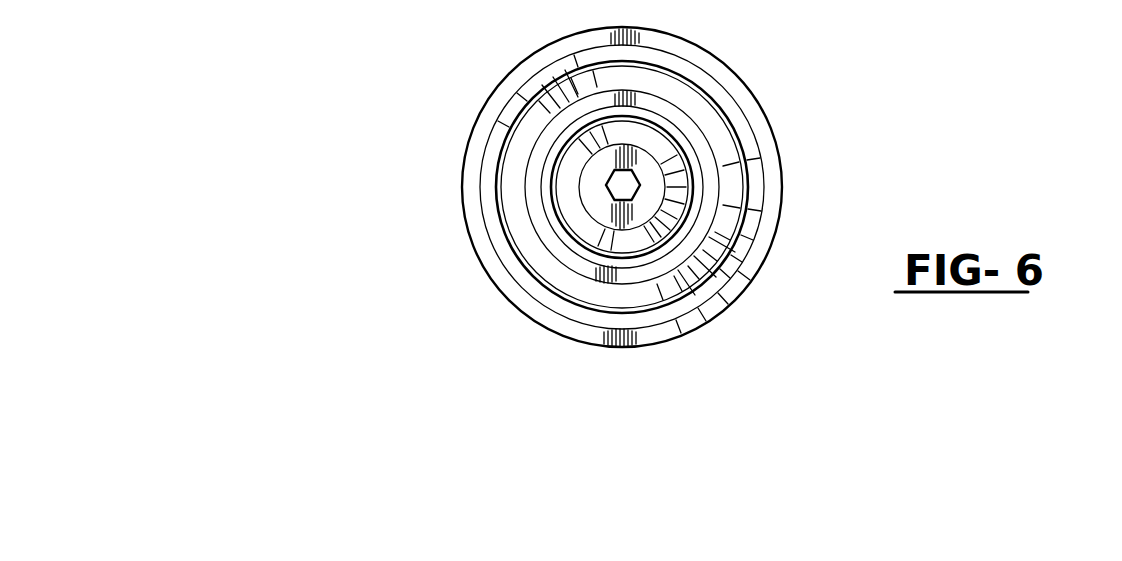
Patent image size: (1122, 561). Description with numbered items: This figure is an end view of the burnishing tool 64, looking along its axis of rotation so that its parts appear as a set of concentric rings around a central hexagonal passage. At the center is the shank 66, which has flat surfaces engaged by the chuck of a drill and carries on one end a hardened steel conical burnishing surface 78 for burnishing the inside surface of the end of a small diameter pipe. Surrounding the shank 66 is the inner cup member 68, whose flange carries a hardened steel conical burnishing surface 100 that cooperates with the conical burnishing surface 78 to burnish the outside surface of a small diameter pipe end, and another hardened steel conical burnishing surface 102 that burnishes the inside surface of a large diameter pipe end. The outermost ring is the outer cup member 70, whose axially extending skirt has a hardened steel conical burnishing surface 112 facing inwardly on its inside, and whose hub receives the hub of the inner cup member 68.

The burnishing tool 64 is at (428, 108).
The shank 66 is at (655, 167).
The inner cup member 68 is at (710, 183).
The outer cup member 70 is at (779, 219).
The conical burnishing surface 78 is at (576, 169).
The conical burnishing surface 100 is at (549, 210).
The conical burnishing surface 102 is at (532, 247).
The conical burnishing surface 112 is at (532, 294).